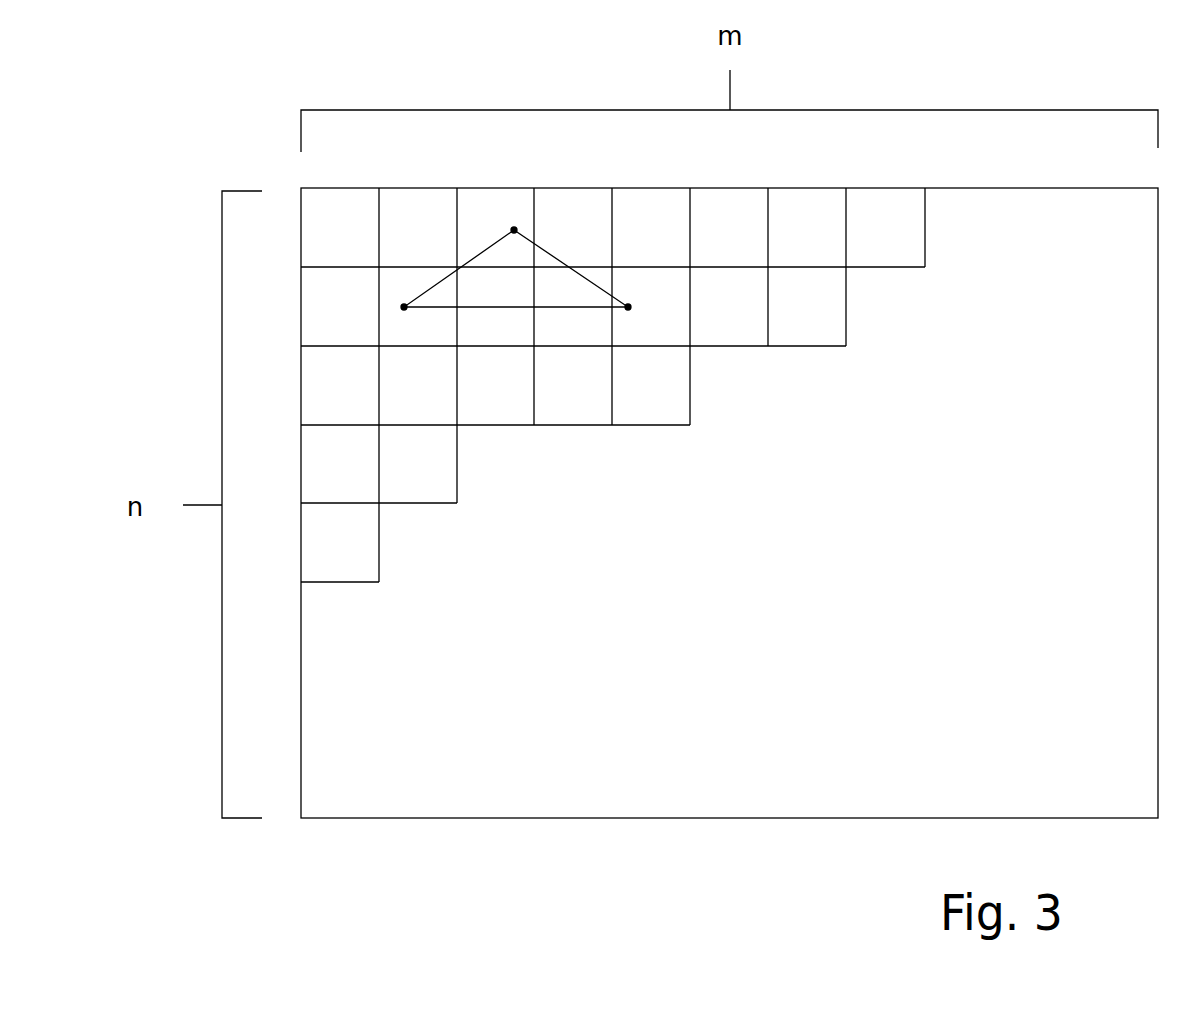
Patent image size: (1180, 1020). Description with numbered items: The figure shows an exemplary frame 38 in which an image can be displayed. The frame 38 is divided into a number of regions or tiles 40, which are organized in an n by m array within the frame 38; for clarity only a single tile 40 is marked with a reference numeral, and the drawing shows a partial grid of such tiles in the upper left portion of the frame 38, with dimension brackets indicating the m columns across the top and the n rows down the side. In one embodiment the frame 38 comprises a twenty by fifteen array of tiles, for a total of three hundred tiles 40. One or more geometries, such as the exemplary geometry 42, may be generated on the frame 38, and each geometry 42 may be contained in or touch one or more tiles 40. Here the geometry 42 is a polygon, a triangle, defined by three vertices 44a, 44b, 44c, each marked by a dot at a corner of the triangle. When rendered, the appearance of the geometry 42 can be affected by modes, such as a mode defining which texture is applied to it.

The frame 38 is at (398, 820).
The tile 40 is at (898, 188).
The geometry 42 is at (557, 258).
The vertex 44a is at (514, 229).
The vertex 44b is at (404, 307).
The vertex 44c is at (628, 307).